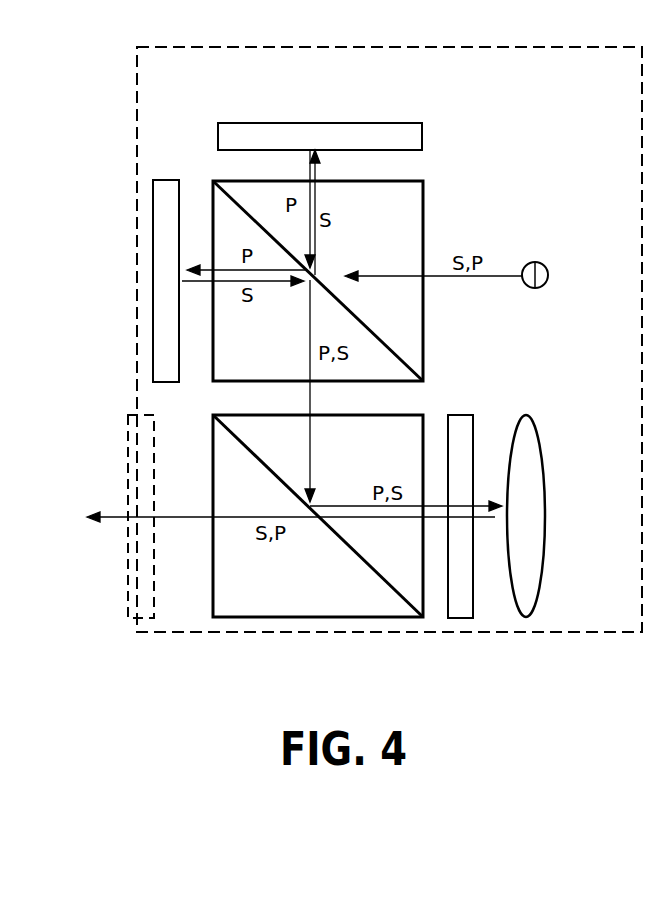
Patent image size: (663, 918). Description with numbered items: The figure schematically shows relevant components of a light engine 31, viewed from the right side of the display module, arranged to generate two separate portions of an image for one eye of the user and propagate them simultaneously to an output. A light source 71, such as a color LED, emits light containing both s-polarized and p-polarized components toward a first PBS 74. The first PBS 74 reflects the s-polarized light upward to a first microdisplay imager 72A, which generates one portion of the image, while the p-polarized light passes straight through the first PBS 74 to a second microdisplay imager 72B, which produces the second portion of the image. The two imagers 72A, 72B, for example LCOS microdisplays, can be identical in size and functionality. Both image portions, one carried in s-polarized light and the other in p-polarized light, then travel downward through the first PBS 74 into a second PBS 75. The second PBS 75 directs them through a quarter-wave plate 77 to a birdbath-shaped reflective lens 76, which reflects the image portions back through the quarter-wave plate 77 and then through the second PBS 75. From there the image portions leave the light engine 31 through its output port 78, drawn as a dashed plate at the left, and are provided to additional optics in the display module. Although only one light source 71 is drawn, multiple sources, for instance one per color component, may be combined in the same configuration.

The light engine 31 is at (633, 85).
The light source 71 is at (546, 266).
The first microdisplay imager 72A is at (422, 138).
The second microdisplay imager 72B is at (152, 218).
The first PBS 74 is at (423, 215).
The second PBS 75 is at (423, 420).
The reflective lens 76 is at (538, 478).
The quarter-wave plate 77 is at (473, 425).
The output port 78 is at (128, 445).